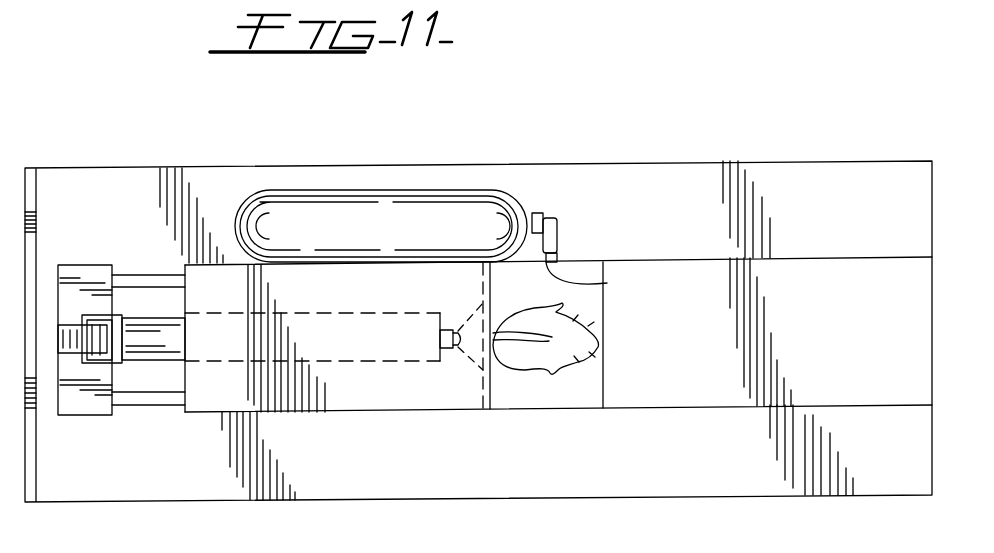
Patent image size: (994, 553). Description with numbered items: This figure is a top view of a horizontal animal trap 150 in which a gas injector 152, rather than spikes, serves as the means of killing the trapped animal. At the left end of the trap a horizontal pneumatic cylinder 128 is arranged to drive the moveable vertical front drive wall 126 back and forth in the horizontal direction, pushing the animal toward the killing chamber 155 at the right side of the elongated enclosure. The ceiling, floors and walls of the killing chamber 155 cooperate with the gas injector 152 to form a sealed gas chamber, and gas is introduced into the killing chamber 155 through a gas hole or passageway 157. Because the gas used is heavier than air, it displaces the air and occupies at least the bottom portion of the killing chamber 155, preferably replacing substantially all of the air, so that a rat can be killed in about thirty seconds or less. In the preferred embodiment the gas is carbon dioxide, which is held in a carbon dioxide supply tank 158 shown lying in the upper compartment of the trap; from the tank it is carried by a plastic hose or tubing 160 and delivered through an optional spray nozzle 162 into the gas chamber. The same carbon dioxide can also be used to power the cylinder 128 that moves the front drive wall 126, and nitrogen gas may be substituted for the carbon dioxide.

The horizontal animal trap 150 is at (433, 438).
The killing chamber 155 is at (580, 408).
The carbon dioxide supply tank 158 is at (410, 191).
The gas injector 152 is at (544, 214).
The plastic hose or tubing 160 is at (558, 228).
The spray nozzle 162 is at (556, 259).
The gas hole or passageway 157 is at (607, 283).
The front drive wall 126 is at (490, 395).
The horizontal pneumatic cylinder 128 is at (162, 363).